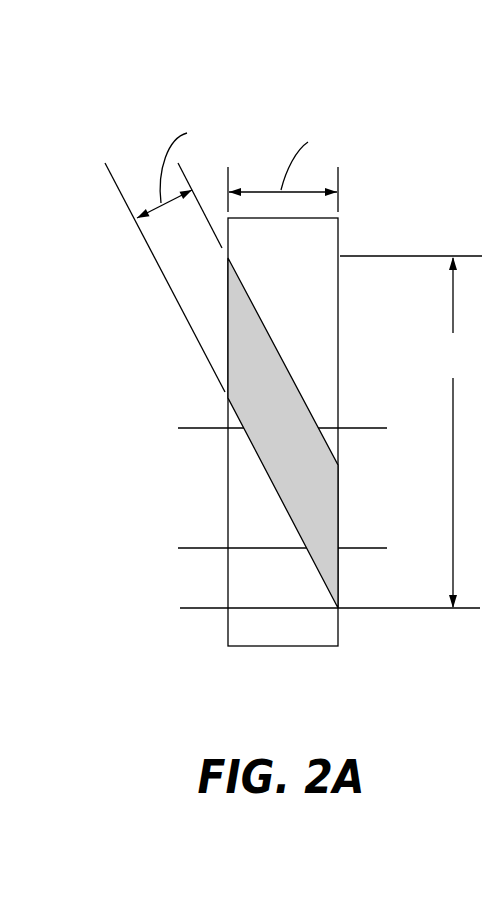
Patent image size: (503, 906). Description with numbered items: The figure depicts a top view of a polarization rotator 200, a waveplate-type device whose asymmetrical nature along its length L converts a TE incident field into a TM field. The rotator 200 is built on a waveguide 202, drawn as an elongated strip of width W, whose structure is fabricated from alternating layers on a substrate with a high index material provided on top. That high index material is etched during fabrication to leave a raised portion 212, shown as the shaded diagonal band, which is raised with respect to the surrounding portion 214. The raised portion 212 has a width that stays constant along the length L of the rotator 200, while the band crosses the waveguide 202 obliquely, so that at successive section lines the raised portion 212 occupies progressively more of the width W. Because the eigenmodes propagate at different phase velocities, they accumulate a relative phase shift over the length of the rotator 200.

The polarization rotator 200 is at (172, 66).
The waveguide 202 is at (362, 208).
The raised portion 212 is at (244, 397).
The portion 214 is at (271, 281).